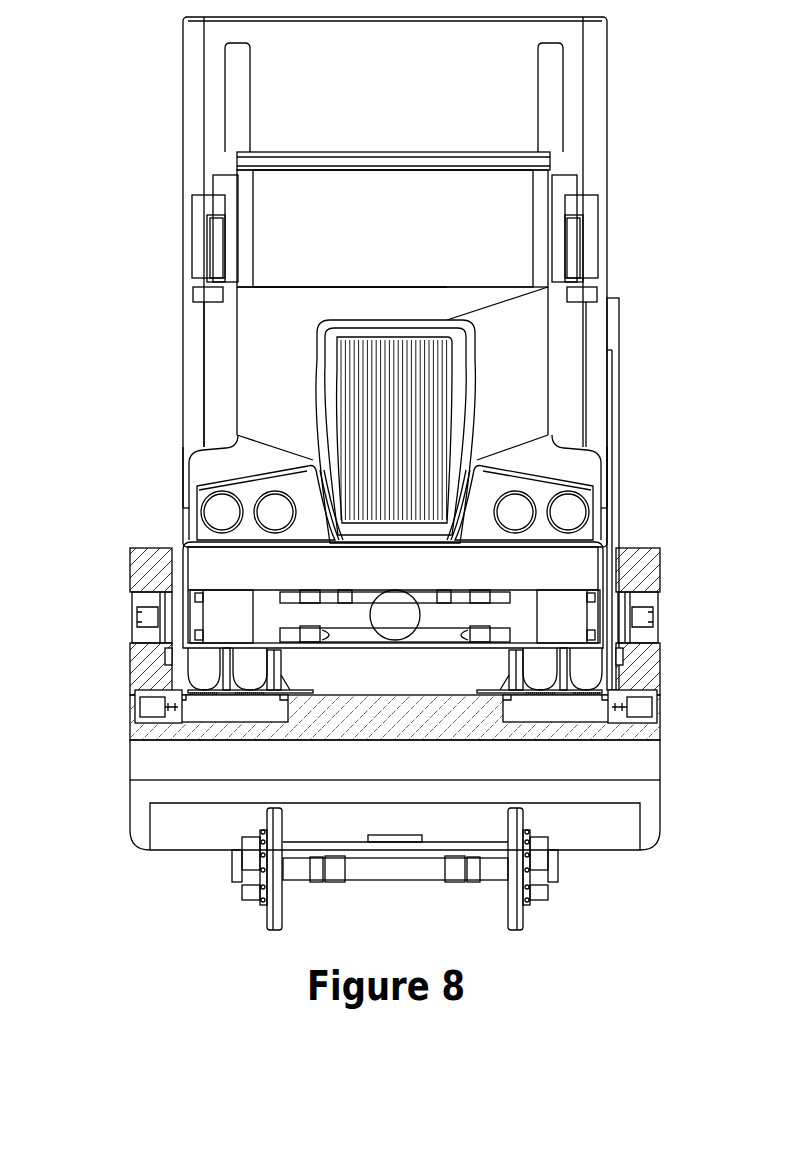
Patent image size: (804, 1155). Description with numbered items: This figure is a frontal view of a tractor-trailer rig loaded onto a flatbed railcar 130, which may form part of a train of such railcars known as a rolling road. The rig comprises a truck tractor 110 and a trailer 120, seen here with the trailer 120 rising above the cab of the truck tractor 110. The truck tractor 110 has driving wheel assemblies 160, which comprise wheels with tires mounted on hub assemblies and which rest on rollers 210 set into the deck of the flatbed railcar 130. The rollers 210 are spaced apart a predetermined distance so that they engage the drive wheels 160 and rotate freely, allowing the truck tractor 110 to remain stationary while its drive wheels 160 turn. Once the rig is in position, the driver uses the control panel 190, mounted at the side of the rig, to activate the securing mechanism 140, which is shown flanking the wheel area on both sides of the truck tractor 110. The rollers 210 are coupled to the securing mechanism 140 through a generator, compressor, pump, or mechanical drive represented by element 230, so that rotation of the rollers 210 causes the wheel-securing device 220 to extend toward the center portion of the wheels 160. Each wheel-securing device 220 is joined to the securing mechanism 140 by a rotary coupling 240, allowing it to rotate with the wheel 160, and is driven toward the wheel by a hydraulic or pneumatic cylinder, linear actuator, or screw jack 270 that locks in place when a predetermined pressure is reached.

The truck tractor 110 is at (395, 467).
The trailer 120 is at (395, 282).
The flatbed railcar 130 is at (395, 812).
The securing mechanism 140 is at (142, 573).
The driving wheel assemblies 160 is at (395, 670).
The control panel 190 is at (614, 332).
The rollers 210 is at (190, 715).
The wheel-securing device 220 is at (167, 623).
The coupling mechanism 230 is at (147, 710).
The rotary coupling 240 is at (145, 617).
The hydraulic or pneumatic cylinder 270 is at (132, 592).